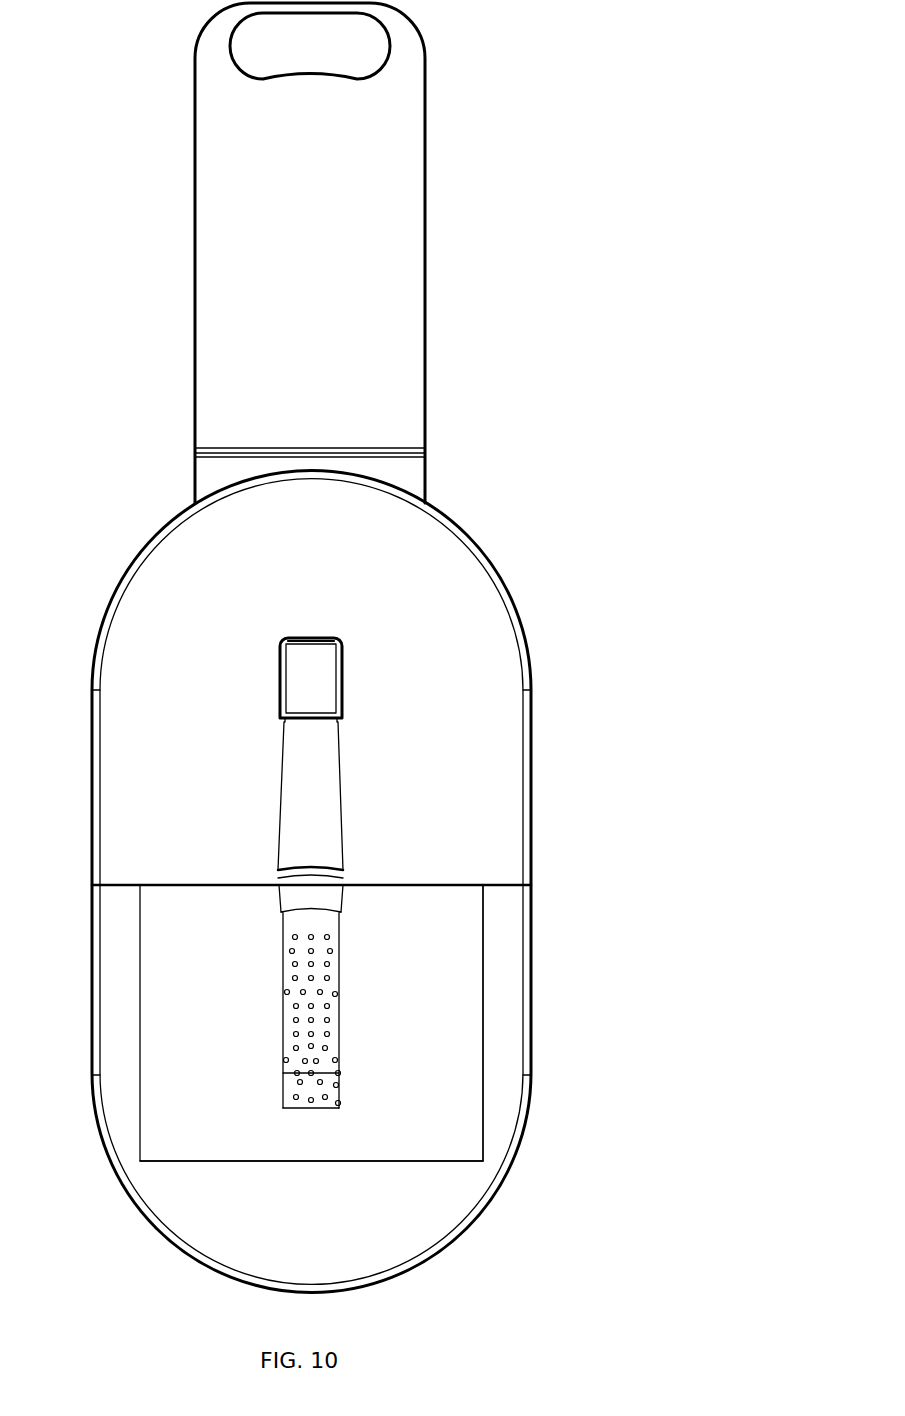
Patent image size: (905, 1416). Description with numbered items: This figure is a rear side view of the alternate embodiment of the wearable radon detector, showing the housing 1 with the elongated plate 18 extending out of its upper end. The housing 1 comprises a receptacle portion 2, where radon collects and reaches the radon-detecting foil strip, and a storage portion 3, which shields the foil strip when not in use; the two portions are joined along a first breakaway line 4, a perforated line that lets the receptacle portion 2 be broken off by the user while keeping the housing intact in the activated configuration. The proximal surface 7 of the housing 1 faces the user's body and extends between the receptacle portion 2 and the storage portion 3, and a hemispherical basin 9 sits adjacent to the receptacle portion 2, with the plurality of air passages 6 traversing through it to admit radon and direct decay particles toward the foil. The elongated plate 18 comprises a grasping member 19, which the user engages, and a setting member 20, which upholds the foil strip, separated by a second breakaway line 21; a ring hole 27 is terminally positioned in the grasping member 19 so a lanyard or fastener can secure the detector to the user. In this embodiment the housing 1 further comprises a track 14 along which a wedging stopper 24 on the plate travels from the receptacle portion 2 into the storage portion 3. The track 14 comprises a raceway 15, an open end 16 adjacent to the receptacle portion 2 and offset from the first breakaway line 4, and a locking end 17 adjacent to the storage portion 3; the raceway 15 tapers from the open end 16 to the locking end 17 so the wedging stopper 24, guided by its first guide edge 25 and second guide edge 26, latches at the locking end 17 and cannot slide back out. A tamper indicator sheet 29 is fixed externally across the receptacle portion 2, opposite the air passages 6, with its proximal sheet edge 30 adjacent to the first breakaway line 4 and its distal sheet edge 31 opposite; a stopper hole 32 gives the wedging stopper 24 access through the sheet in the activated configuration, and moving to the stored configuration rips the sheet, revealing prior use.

The housing 1 is at (547, 760).
The receptacle portion 2 is at (519, 1058).
The storage portion 3 is at (517, 698).
The first breakaway line 4 is at (92, 885).
The plurality of air passages 6 is at (330, 951).
The proximal surface 7 is at (324, 1237).
The hemispherical basin 9 is at (286, 920).
The track 14 is at (340, 768).
The raceway 15 is at (343, 845).
The open end 16 is at (283, 1098).
The locking end 17 is at (340, 643).
The elongated plate 18 is at (448, 283).
The grasping member 19 is at (324, 364).
The setting member 20 is at (325, 838).
The second breakaway line 21 is at (253, 450).
The wedging stopper 24 is at (326, 688).
The first guide edge 25 is at (342, 680).
The second guide edge 26 is at (280, 686).
The ring hole 27 is at (385, 38).
The tamper indicator sheet 29 is at (487, 997).
The proximal sheet edge 30 is at (445, 885).
The distal sheet edge 31 is at (399, 1161).
The stopper hole 32 is at (340, 1080).